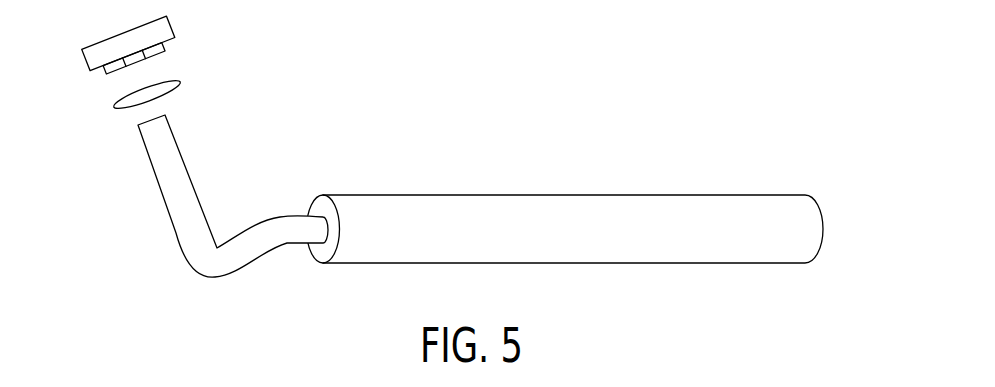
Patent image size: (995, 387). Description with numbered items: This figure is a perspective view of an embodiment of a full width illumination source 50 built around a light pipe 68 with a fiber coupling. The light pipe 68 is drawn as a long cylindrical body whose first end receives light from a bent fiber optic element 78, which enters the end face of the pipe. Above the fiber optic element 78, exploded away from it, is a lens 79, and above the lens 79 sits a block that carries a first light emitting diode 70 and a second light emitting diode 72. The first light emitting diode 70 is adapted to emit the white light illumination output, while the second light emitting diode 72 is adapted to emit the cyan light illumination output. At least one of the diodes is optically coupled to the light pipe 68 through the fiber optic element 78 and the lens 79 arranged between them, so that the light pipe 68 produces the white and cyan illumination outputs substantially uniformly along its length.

The full width illumination source 50 is at (676, 106).
The light pipe 68 is at (365, 248).
The first light emitting diode 70 is at (158, 55).
The second light emitting diode 72 is at (115, 73).
The fiber optic element 78 is at (162, 165).
The lens 79 is at (180, 80).